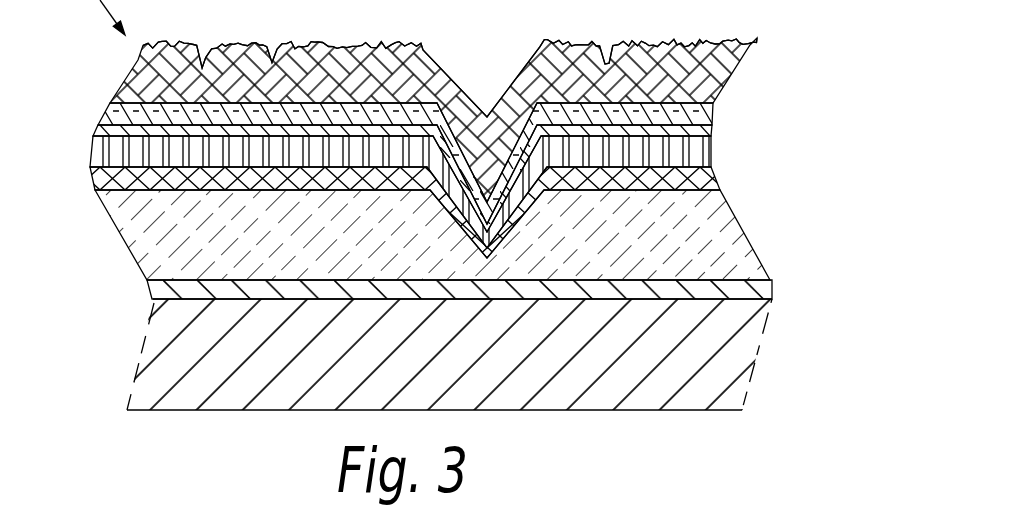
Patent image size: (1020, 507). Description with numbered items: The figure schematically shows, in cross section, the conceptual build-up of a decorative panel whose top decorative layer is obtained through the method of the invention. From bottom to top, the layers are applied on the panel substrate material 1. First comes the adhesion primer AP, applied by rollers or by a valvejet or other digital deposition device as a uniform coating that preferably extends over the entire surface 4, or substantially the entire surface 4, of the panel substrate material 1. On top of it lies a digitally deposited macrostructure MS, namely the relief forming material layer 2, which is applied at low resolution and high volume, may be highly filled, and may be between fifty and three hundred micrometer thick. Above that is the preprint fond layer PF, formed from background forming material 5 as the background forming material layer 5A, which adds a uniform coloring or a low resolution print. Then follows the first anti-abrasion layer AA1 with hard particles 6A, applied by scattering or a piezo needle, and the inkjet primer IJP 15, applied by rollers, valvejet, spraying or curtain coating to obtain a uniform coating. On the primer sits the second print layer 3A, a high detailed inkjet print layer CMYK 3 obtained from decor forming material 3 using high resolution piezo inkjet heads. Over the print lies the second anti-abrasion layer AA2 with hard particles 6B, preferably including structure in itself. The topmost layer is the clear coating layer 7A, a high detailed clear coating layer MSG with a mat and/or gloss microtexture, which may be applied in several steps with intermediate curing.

The panel substrate material 1 is at (693, 360).
The relief forming material layer 2 is at (177, 240).
The decor forming material 3 is at (157, 106).
The second print layer 3A is at (482, 162).
The surface of the panel substrate material 4 is at (176, 311).
The background forming material 5 is at (155, 178).
The background forming material layer 5A is at (467, 212).
The hard particles of the first anti-abrasion layer 6A is at (128, 152).
The hard particles of the second anti-abrasion layer 6B is at (153, 80).
The clear coating layer 7A is at (147, 50).
The inkjet primer layer (IJP) 15 is at (157, 123).
The high detailed clear coating layer MSG is at (757, 38).
The second anti-abrasion layer AA2 is at (705, 82).
The CMYK high detailed inkjet print layer CMYK 3 is at (713, 113).
The inkjet primer IJP is at (713, 132).
The first anti-abrasion layer AA1 is at (713, 155).
The preprint fond layer PF is at (713, 183).
The macrostructure MS is at (733, 222).
The adhesion primer AP is at (733, 288).